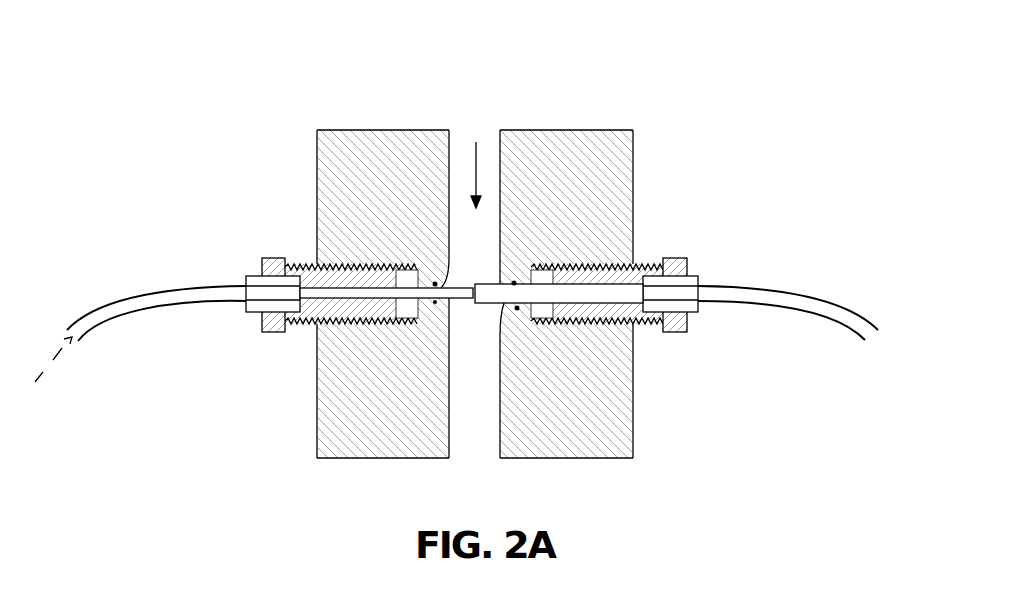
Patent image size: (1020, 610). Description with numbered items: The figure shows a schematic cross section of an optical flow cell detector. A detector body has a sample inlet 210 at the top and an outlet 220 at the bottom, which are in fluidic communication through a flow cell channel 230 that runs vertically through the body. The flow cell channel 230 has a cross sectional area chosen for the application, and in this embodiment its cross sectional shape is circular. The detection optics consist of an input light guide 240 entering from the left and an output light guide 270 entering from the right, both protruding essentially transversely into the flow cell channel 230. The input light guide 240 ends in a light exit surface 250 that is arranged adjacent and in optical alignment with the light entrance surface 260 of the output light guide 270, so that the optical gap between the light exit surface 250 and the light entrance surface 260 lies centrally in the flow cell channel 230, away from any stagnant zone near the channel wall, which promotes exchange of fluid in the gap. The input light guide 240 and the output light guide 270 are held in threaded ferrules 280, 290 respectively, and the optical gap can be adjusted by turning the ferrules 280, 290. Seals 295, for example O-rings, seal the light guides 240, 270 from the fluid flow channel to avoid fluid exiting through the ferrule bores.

The sample inlet 210 is at (483, 118).
The outlet 220 is at (493, 464).
The flow cell channel 230 is at (458, 354).
The input light guide 240 is at (441, 304).
The light exit surface 250 is at (457, 314).
The light entrance surface 260 is at (489, 272).
The output light guide 270 is at (508, 277).
The threaded ferrule 280 is at (297, 250).
The threaded ferrule 290 is at (654, 250).
The seal 295 is at (529, 323).